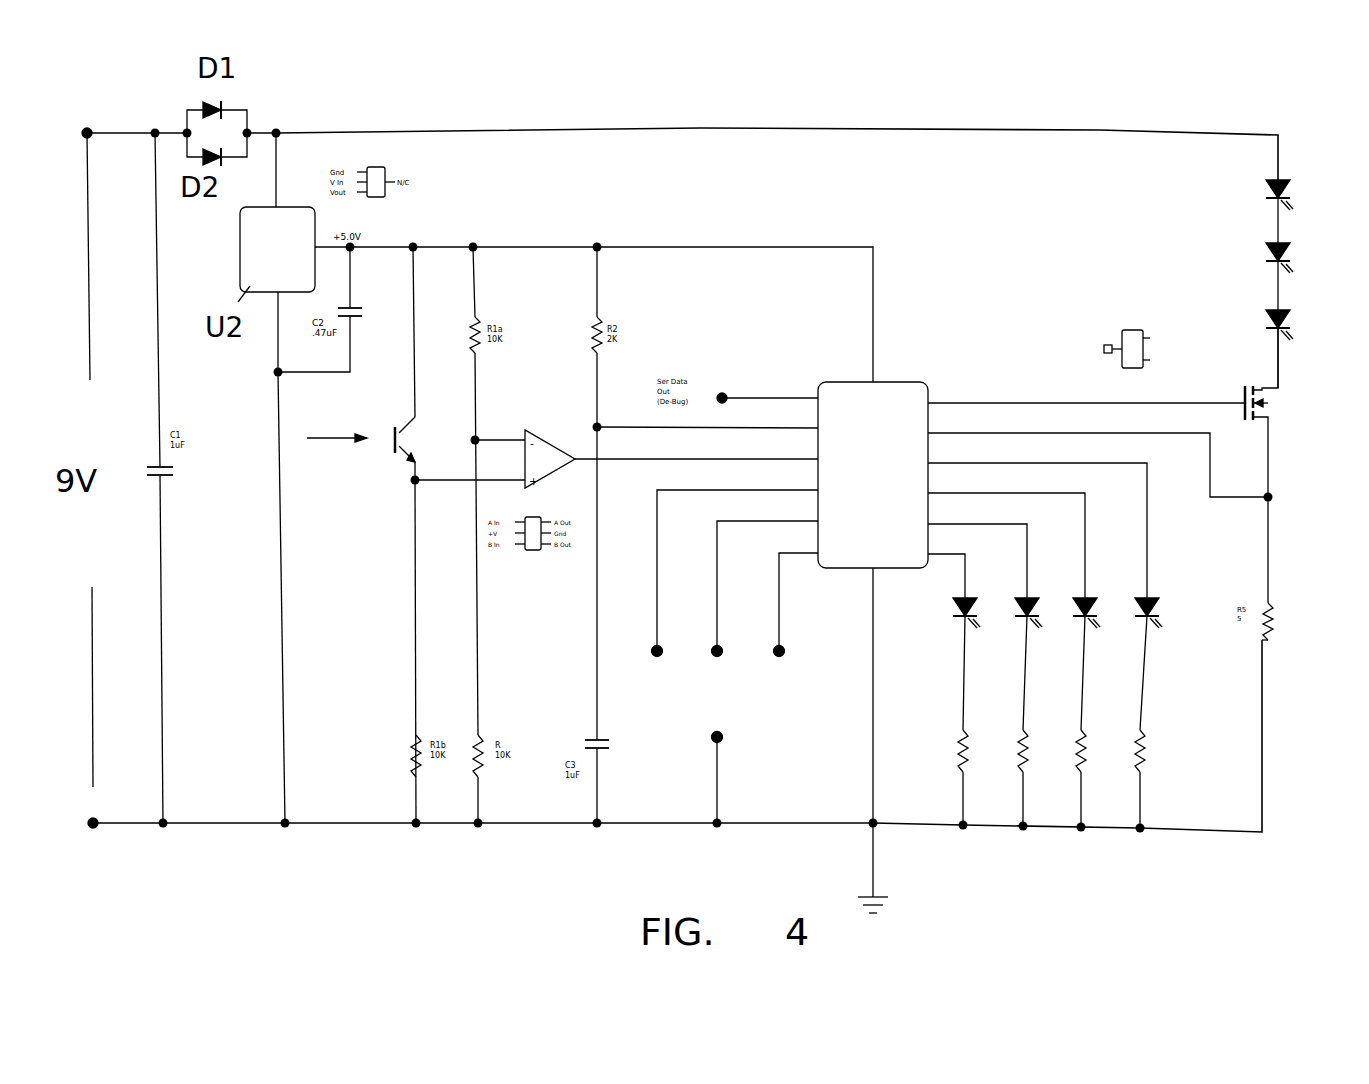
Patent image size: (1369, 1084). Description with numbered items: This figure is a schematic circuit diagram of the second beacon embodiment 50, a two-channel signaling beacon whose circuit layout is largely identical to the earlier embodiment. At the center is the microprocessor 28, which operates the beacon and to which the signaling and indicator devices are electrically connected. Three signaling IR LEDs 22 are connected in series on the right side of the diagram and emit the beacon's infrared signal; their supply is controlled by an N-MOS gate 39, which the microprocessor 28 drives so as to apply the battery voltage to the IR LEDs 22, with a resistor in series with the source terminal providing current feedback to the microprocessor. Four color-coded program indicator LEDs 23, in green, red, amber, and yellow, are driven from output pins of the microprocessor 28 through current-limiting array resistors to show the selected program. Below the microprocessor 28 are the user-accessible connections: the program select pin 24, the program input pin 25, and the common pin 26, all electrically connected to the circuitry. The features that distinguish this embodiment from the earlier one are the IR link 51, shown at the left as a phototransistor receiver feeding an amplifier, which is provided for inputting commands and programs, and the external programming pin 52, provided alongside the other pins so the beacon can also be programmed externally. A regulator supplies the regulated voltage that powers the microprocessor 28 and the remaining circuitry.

The signaling IR LEDs 22 is at (1300, 195).
The program indicator LEDs 23 is at (1007, 595).
The program select pin 24 is at (720, 662).
The program input pin 25 is at (657, 660).
The common pin 26 is at (710, 742).
The microprocessor 28 is at (890, 392).
The N-MOS gate 39 is at (1236, 396).
The second beacon embodiment 50 is at (1030, 222).
The IR link 51 is at (375, 464).
The external programming pin 52 is at (789, 672).